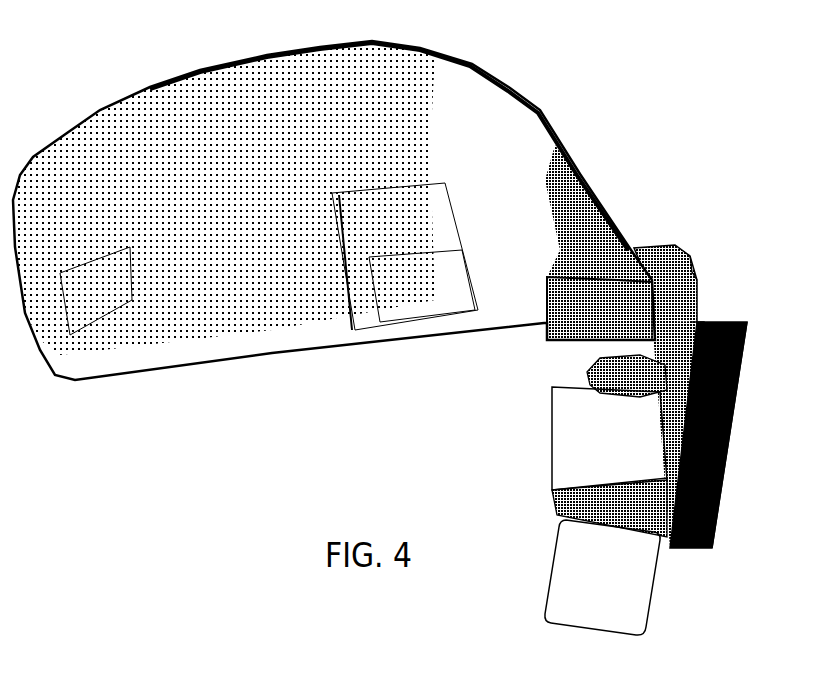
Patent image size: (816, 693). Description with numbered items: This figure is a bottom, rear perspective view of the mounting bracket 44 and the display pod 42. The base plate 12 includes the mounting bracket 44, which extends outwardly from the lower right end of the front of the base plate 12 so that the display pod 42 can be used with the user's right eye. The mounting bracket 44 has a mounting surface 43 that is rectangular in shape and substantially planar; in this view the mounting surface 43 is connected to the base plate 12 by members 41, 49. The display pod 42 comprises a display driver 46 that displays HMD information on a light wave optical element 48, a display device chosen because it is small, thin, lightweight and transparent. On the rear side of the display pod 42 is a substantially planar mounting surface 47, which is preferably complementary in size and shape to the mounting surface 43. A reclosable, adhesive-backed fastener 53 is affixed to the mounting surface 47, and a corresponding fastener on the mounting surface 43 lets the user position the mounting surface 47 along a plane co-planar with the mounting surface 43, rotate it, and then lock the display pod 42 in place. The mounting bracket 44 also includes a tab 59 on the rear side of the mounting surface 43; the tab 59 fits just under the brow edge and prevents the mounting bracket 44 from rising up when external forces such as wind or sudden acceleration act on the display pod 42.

The base plate 12 is at (117, 69).
The member 41 is at (644, 258).
The display pod 42 is at (738, 516).
The mounting surface 43 is at (687, 280).
The mounting bracket 44 is at (542, 416).
The display driver 46 is at (737, 393).
The mounting surface 47 is at (701, 320).
The light wave optical element 48 is at (632, 590).
The member 49 is at (672, 327).
The reclosable adhesive-backed fastener 53 is at (701, 365).
The tab 59 is at (600, 367).